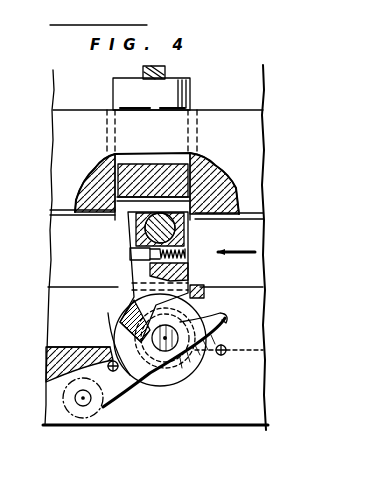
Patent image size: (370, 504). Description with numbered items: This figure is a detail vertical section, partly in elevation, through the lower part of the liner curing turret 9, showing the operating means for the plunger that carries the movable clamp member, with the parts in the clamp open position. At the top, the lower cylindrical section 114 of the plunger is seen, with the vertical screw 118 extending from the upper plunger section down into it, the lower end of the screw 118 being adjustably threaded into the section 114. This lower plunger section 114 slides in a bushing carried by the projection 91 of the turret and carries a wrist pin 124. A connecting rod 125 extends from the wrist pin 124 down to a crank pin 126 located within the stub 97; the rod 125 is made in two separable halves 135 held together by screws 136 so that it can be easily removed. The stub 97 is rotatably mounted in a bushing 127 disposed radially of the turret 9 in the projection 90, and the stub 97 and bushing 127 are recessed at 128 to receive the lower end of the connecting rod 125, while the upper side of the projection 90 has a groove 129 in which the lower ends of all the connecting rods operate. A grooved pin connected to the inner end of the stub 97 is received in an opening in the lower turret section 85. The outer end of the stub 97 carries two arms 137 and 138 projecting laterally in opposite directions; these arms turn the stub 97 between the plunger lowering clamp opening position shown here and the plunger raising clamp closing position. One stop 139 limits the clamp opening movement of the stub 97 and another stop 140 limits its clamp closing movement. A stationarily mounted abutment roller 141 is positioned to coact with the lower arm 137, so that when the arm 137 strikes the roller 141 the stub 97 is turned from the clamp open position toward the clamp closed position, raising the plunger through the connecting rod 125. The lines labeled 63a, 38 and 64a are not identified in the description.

The lower cylindrical section 114 is at (114, 92).
The vertical screw 118 is at (165, 72).
The lower turret section 85 is at (255, 100).
The turret 9 is at (270, 160).
The projection 91 is at (255, 194).
The wall portion 63a is at (50, 210).
The wall 38 is at (9, 245).
The wall portion 64a is at (48, 287).
The wrist pin 124 is at (136, 232).
The connecting rod 125 is at (143, 276).
The screws 136 is at (186, 250).
The separable halves 135 is at (186, 271).
The recess 128 is at (121, 313).
The stub 97 is at (118, 342).
The groove 129 is at (58, 330).
The arm 138 is at (222, 316).
The stop 139 is at (108, 366).
The stop 140 is at (226, 348).
The crank pin 126 is at (198, 362).
The bushing 127 is at (208, 396).
The abutment roller 141 is at (62, 398).
The projection 90 is at (266, 398).
The arm 137 is at (125, 387).